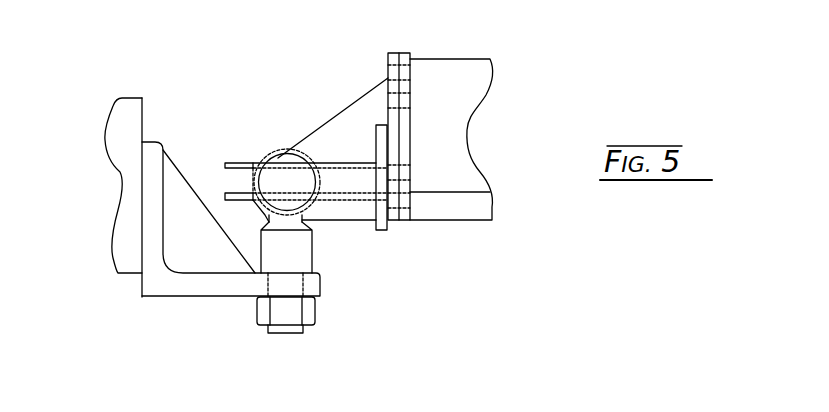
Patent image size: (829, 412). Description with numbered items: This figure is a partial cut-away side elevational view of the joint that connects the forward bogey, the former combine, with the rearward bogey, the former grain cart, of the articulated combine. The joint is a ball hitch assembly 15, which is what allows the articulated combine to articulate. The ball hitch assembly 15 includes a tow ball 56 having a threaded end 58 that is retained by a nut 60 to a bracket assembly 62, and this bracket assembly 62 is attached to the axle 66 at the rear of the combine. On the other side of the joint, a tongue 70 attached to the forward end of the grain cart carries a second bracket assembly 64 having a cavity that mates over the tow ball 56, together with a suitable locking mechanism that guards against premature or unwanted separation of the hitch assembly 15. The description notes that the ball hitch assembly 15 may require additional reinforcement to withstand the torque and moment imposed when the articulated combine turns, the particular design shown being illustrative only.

The ball hitch assembly 15 is at (256, 111).
The tow ball 56 is at (303, 253).
The threaded end 58 is at (290, 333).
The nut 60 is at (308, 310).
The bracket assembly 62 is at (312, 282).
The bracket assembly 64 is at (352, 110).
The axle 66 is at (130, 100).
The tongue 70 is at (448, 58).